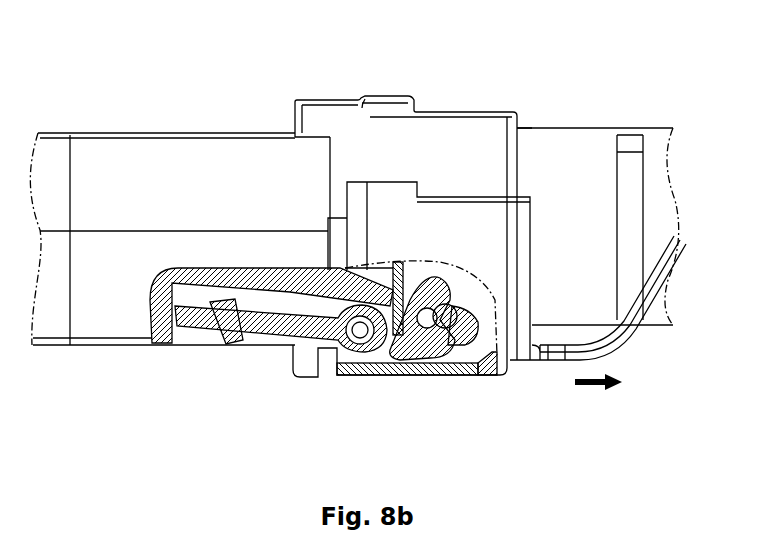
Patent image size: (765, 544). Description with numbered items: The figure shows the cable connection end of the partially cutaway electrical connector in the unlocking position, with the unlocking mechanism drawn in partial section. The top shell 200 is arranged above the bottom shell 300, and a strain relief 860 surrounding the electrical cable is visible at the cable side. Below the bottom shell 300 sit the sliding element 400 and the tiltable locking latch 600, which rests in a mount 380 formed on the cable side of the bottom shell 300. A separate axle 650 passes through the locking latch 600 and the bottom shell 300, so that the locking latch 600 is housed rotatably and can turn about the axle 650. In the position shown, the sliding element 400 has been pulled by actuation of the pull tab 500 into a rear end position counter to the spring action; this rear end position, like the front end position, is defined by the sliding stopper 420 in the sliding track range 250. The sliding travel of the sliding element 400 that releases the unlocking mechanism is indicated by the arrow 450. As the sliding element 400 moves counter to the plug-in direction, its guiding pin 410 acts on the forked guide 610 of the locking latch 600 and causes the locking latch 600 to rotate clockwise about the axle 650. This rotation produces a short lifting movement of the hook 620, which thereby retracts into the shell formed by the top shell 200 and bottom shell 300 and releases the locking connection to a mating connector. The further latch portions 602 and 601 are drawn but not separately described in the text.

The top shell 200 is at (181, 200).
The bottom shell 300 is at (98, 281).
The sliding element 400 is at (470, 243).
The sliding track range 250 is at (357, 187).
The sliding stopper 420 is at (393, 193).
The mount 380 is at (257, 300).
The lever 602 is at (258, 338).
The hook 620 is at (205, 345).
The axle 650 is at (358, 348).
The locking latch 600 is at (310, 362).
The hook 601 is at (403, 340).
The forked guide 610 is at (448, 332).
The guiding pin 410 is at (462, 327).
The pull tab 500 is at (623, 327).
The arrow 450 is at (598, 395).
The strain relief 860 is at (593, 216).